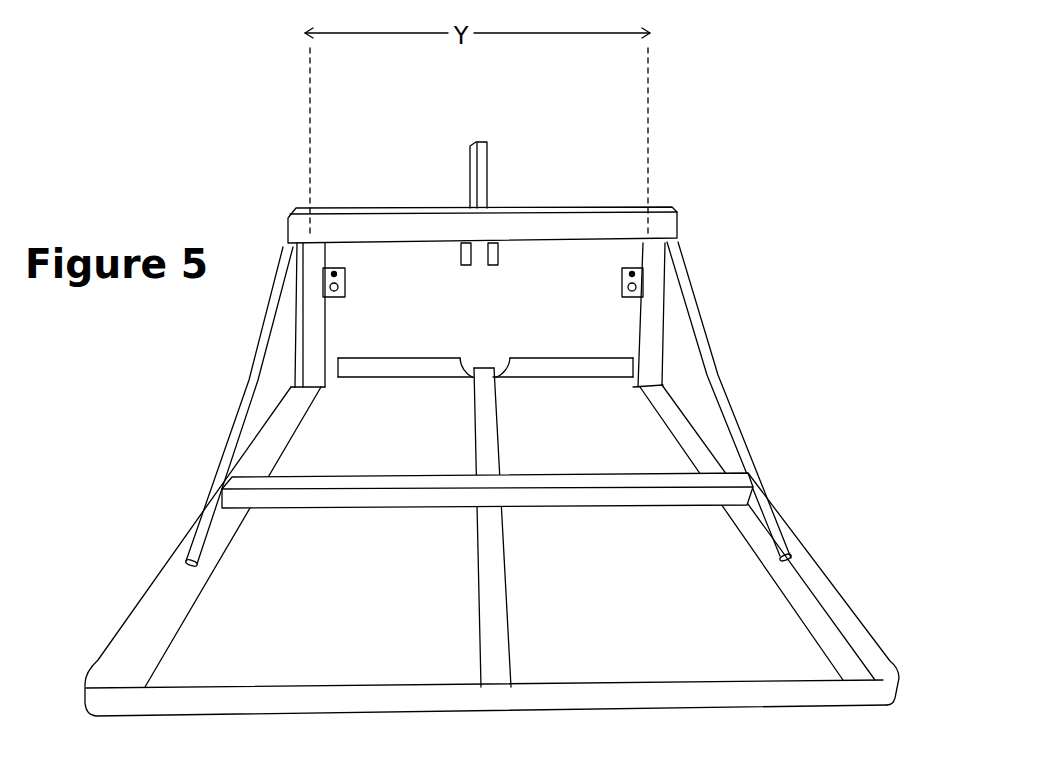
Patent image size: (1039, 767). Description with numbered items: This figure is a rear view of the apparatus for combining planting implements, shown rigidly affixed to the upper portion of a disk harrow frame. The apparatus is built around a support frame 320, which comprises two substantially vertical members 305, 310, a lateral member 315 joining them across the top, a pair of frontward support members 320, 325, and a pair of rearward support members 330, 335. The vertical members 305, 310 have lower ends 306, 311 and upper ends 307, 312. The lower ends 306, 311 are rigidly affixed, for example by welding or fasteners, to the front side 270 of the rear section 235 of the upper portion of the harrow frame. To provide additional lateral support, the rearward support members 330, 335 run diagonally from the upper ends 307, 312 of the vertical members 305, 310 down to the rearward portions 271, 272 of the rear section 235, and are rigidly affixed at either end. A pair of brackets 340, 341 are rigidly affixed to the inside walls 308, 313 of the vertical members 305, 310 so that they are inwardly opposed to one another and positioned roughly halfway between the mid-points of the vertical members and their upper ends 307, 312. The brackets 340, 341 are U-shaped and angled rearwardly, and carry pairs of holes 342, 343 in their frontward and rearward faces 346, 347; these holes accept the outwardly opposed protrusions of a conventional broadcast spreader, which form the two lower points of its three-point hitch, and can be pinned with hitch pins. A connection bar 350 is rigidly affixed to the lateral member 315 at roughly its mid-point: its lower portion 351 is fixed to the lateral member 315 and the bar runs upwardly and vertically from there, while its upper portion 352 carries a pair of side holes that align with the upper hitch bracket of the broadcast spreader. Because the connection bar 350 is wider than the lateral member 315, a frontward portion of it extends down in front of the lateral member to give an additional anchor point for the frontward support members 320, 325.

The rear section 235 is at (683, 482).
The front side 270 is at (432, 368).
The rearward portion 271 is at (514, 545).
The rearward portion 272 is at (462, 551).
The substantially vertical member 305 is at (652, 337).
The lower end 306 is at (641, 387).
The upper end 307 is at (667, 238).
The inside wall 308 is at (636, 322).
The substantially vertical member 310 is at (317, 338).
The lower end 311 is at (331, 387).
The upper end 312 is at (303, 240).
The inside wall 313 is at (330, 328).
The lateral member 315 is at (358, 232).
The support frame 320 is at (608, 208).
The frontward support member 325 is at (458, 243).
The rearward support member 330 is at (735, 440).
The rearward support member 335 is at (229, 458).
The bracket 340 is at (625, 272).
The bracket 341 is at (323, 277).
The pair of holes 342 is at (612, 282).
The pair of holes 343 is at (352, 280).
The rearward face 346 is at (634, 288).
The rearward face 347 is at (330, 289).
The connection bar 350 is at (468, 178).
The lower portion 351 is at (480, 200).
The upper portion 352 is at (481, 155).